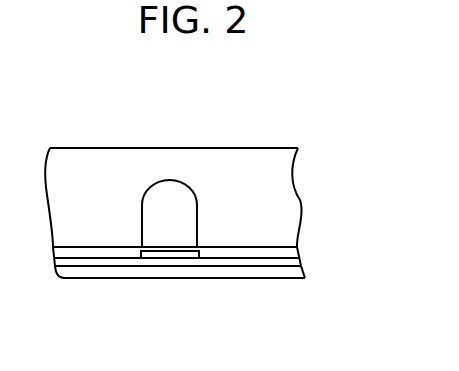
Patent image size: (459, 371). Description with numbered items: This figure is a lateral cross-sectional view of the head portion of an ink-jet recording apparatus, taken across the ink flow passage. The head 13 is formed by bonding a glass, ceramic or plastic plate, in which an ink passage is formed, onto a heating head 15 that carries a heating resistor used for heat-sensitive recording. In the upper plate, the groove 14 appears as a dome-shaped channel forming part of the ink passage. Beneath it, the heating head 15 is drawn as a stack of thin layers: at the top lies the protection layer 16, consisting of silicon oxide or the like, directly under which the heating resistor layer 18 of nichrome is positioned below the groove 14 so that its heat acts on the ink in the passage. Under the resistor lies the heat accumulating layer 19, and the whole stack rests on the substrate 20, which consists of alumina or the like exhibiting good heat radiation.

The head 13 is at (82, 148).
The groove 14 is at (175, 179).
The heating head 15 is at (322, 245).
The protection layer 16 is at (213, 253).
The heating resistor layer 18 is at (162, 253).
The heat accumulating layer 19 is at (250, 263).
The substrate 20 is at (107, 268).